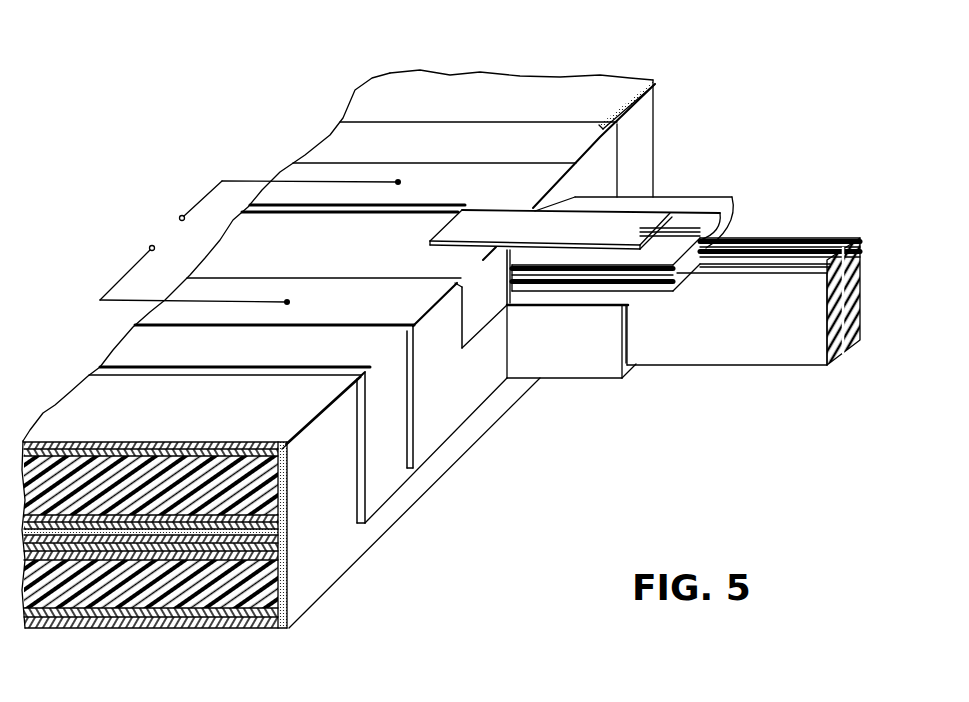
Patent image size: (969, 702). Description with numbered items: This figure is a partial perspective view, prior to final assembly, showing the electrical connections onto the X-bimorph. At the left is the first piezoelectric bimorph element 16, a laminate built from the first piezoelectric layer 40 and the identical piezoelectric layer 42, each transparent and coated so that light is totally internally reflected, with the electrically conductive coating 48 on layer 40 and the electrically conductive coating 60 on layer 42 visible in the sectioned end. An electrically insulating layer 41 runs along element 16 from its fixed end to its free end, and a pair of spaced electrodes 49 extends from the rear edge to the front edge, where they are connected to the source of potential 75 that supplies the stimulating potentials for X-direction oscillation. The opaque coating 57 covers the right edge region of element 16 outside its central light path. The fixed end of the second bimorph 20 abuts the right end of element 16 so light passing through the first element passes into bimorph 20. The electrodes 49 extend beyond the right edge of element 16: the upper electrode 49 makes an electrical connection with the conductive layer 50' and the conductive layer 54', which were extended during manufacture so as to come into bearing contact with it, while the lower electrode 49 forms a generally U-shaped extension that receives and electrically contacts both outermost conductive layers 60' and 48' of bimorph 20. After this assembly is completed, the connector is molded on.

The first piezoelectric bimorph element 16 is at (548, 60).
The opaque coating 57 is at (327, 506).
The first piezoelectric layer 40 is at (117, 477).
The piezoelectric layer 42 is at (206, 598).
The electrically conductive coating 60 is at (151, 558).
The electrically conductive coating 48 is at (225, 394).
The electrically insulating layer 41 is at (314, 362).
The electrodes 49 is at (503, 203).
The source of potential 75 is at (150, 210).
The conductive layer 50' is at (727, 196).
The bimorph 20 is at (810, 229).
The conductive layer 54' is at (606, 283).
The conductive layer 60' is at (667, 325).
The conductive layer 48' is at (852, 318).